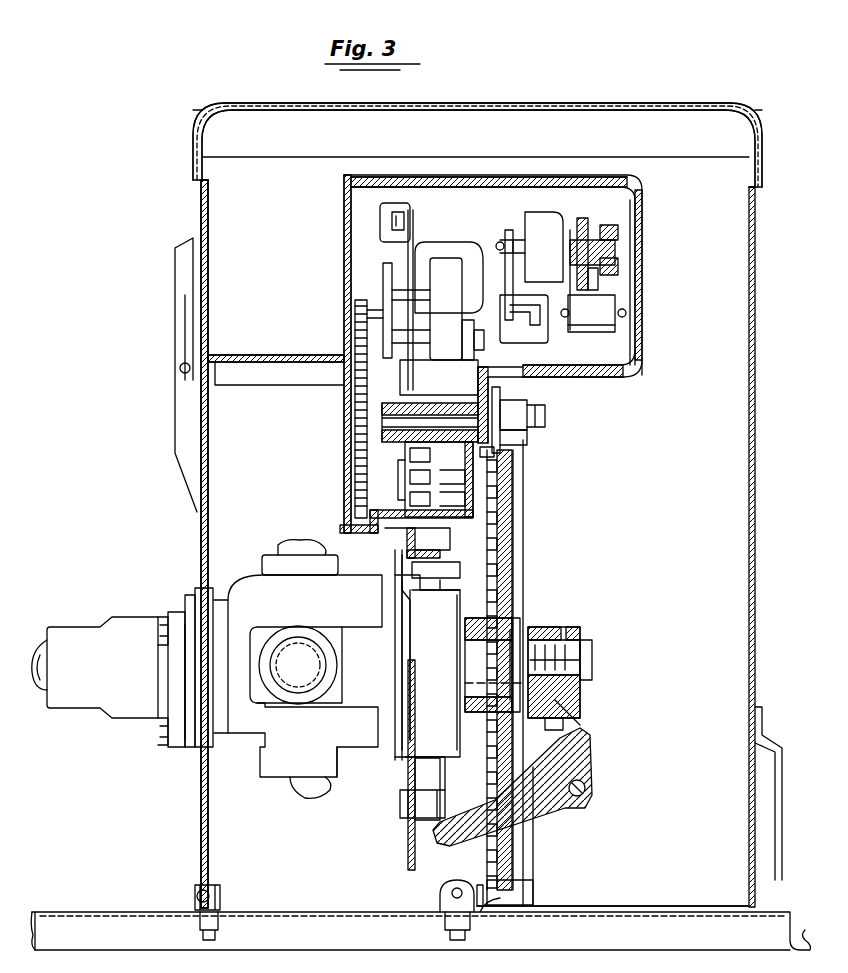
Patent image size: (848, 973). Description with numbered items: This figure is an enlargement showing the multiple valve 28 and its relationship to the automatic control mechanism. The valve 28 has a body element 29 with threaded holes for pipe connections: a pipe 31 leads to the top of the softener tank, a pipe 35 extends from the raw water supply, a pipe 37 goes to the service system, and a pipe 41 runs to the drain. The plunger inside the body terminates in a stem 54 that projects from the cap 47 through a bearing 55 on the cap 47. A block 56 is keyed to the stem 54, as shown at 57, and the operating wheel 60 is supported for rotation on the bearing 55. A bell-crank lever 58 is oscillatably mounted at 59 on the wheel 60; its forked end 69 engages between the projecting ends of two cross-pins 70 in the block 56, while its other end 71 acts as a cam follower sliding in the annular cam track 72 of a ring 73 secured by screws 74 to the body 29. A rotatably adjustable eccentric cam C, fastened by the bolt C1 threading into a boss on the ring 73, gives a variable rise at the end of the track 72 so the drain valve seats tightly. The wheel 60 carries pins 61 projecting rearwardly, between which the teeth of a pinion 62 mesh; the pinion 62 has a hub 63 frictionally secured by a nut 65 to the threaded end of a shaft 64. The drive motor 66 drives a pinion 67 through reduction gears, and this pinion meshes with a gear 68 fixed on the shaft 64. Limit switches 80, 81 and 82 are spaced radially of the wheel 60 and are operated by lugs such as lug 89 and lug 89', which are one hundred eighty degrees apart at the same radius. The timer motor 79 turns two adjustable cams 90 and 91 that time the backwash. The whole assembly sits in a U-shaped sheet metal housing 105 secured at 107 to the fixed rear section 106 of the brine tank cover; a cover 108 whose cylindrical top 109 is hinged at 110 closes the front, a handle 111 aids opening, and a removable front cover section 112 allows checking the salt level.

The cover 108 is at (756, 588).
The top of the cover 109 is at (590, 103).
The hinge 110 is at (180, 369).
The drive motor 66 is at (443, 232).
The pinion 67 is at (372, 296).
The timer motor 79 is at (545, 220).
The cam 91 is at (605, 278).
The cam 90 is at (590, 300).
The shaft 64 is at (400, 442).
The limit switch 80 is at (458, 452).
The limit switch 81 is at (458, 477).
The limit switch 82 is at (458, 500).
The gear 68 is at (404, 498).
The pinion 62 is at (500, 393).
The hub 63 is at (535, 418).
The nut 65 is at (527, 438).
The lug 89 is at (526, 472).
The operating wheel 60 is at (523, 567).
The ring 73 is at (403, 538).
The screws 74 is at (393, 570).
The cam track 72 is at (438, 580).
The cap 47 is at (430, 652).
The bearing 55 is at (470, 673).
The stem 54 is at (582, 688).
The key 57 is at (563, 640).
The cross-pins 70 is at (590, 648).
The block 56 is at (563, 724).
The forked end 69 is at (580, 725).
The bell-crank lever 58 is at (592, 770).
The pivot 59 is at (585, 795).
The cam follower end 71 is at (440, 838).
The bolt C1 is at (445, 800).
The cam C is at (418, 770).
The multiple valve 28 is at (243, 757).
The pipe 37 is at (325, 672).
The body element 29 is at (358, 722).
The pipe 31 is at (275, 548).
The pipe 35 is at (325, 790).
The pipe 41 is at (45, 710).
The fixed rear section 106 is at (165, 910).
The removable front cover section 112 is at (640, 895).
The housing 105 is at (200, 820).
The fastening 107 is at (212, 887).
The pegs or pins 61 is at (500, 892).
The lug 89' is at (491, 925).
The handle or knob 111 is at (775, 745).